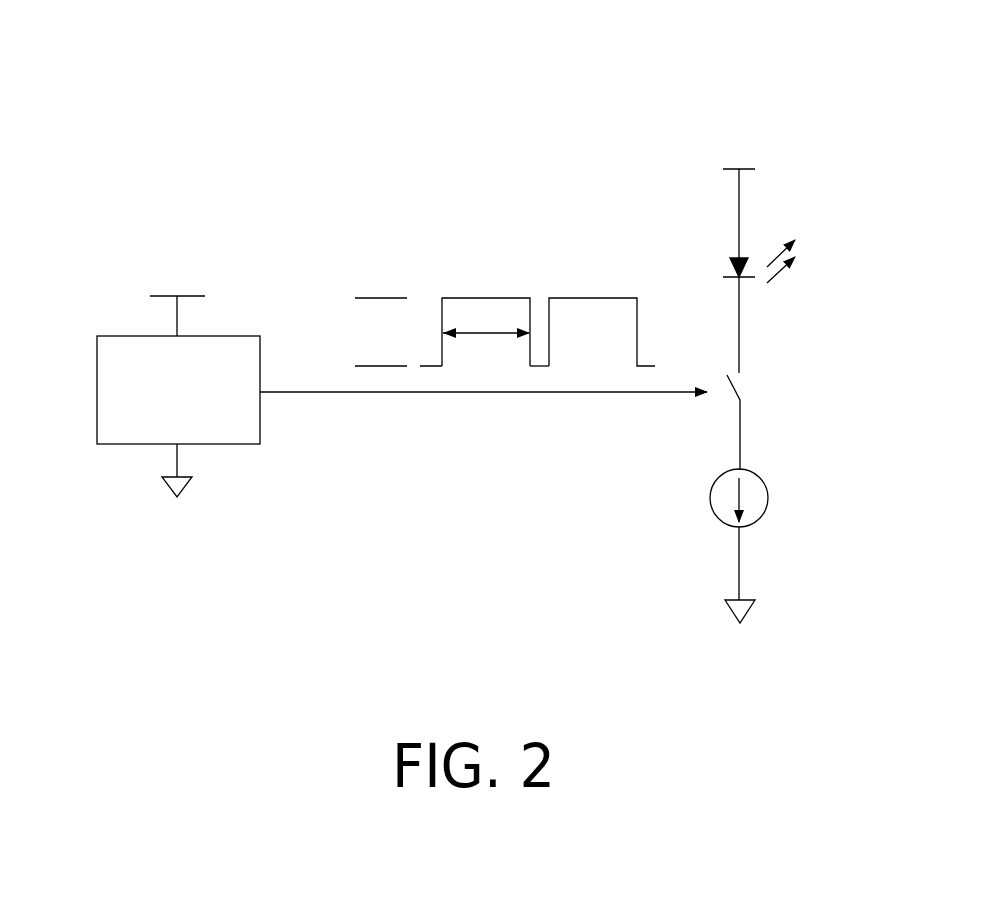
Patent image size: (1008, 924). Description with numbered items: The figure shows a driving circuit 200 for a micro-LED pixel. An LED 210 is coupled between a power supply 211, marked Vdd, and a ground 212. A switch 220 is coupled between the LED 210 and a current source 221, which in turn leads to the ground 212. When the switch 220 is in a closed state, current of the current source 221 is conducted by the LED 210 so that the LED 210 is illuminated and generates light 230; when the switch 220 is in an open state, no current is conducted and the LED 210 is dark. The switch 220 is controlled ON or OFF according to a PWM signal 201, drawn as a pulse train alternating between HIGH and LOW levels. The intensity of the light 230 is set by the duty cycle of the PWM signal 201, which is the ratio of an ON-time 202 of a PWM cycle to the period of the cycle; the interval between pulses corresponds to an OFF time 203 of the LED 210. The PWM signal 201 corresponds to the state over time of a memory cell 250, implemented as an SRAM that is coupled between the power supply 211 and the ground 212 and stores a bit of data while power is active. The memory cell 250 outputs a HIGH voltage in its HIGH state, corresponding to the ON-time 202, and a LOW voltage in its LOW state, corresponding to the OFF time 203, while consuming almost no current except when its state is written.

The circuit 200 is at (123, 68).
The PWM signal 201 is at (462, 298).
The ON-time 202 is at (488, 333).
The OFF time 203 is at (538, 372).
The LED 210 is at (697, 280).
The power supply 211 is at (128, 260).
The ground 212 is at (212, 475).
The switch 220 is at (773, 392).
The current source 221 is at (787, 493).
The light 230 is at (817, 243).
The memory cell 250 is at (128, 335).